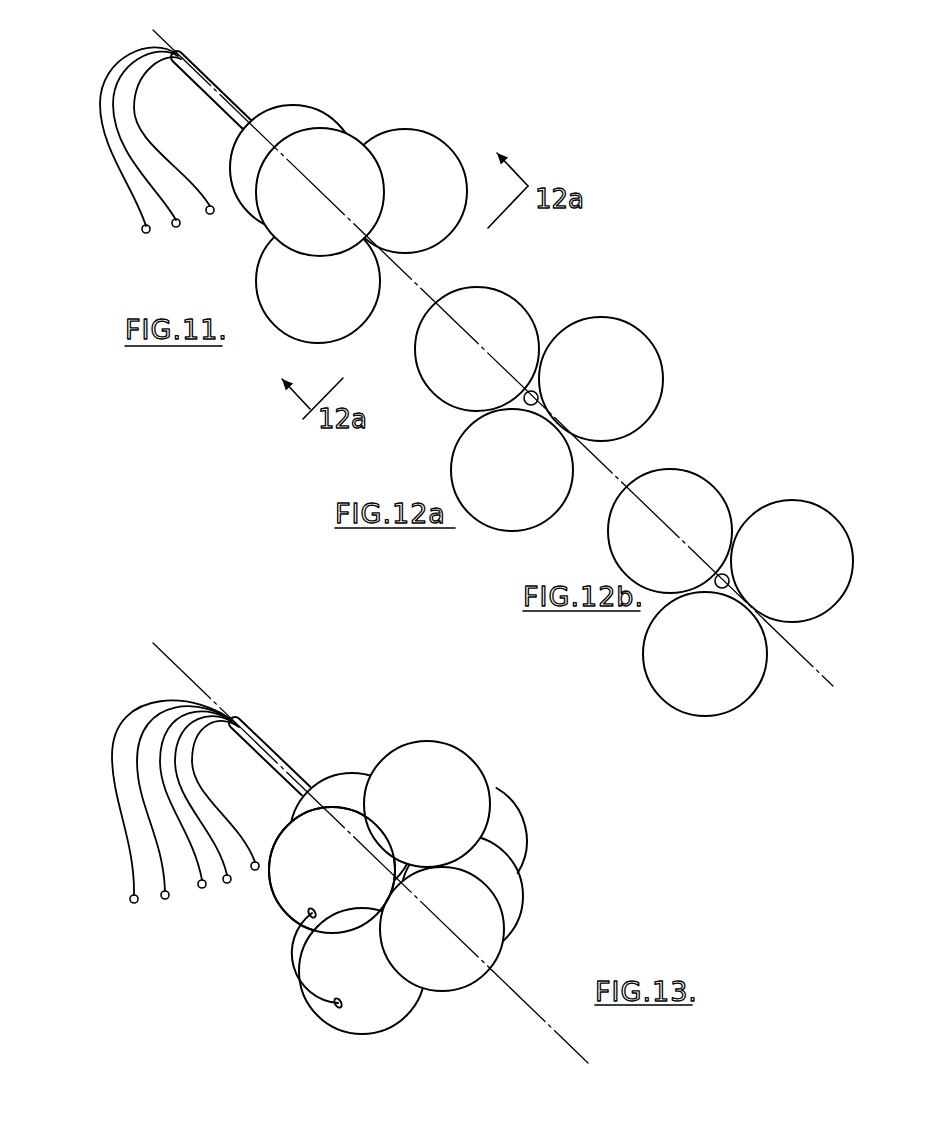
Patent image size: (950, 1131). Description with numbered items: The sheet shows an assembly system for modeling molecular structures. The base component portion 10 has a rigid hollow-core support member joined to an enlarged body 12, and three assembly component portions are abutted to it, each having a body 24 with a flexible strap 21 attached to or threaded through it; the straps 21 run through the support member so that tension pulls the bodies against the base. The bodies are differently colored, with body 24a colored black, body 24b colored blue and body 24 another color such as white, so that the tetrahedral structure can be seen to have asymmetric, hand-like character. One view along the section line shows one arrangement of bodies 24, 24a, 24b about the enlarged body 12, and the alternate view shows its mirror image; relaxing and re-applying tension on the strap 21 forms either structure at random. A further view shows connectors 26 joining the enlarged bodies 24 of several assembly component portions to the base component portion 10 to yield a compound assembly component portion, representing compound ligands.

In FIG. 11, the base component portion 10 is at (232, 82).
In FIG. 13, the base component portion 10 is at (284, 752).
In FIG. 11, the enlarged body 12 is at (300, 104).
In FIG. 12A, the enlarged body 12 is at (545, 338).
In FIG. 12B, the enlarged body 12 is at (735, 520).
In FIG. 13, the enlarged body 12 is at (345, 772).
In FIG. 11, the flexible strap 21 is at (132, 162).
In FIG. 13, the flexible strap 21 is at (232, 823).
In FIG. 11, the body 24 is at (349, 141).
In FIG. 12A, the body 24 is at (486, 287).
In FIG. 12B, the body 24 is at (664, 472).
In FIG. 13, the body 24 is at (457, 747).
In FIG. 11, the assembly component portion body colored black 24a is at (435, 133).
In FIG. 12A, the assembly component portion body colored black 24a is at (653, 373).
In FIG. 12B, the assembly component portion body colored black 24a is at (647, 640).
In FIG. 11, the assembly component portion body colored blue 24b is at (262, 292).
In FIG. 12A, the assembly component portion body colored blue 24b is at (452, 480).
In FIG. 12B, the assembly component portion body colored blue 24b is at (823, 512).
In FIG. 13, the connectors 26 is at (523, 825).